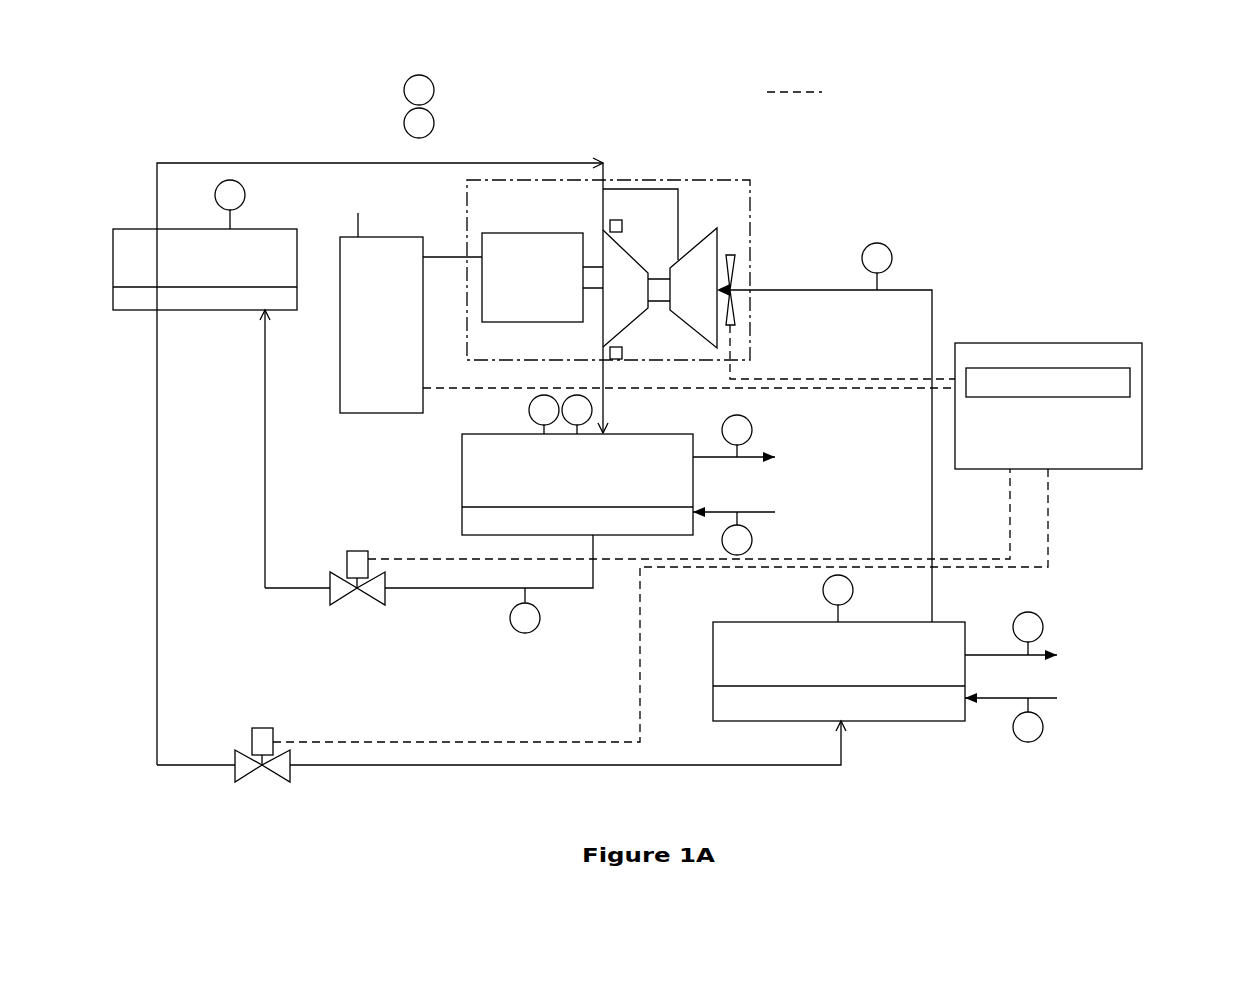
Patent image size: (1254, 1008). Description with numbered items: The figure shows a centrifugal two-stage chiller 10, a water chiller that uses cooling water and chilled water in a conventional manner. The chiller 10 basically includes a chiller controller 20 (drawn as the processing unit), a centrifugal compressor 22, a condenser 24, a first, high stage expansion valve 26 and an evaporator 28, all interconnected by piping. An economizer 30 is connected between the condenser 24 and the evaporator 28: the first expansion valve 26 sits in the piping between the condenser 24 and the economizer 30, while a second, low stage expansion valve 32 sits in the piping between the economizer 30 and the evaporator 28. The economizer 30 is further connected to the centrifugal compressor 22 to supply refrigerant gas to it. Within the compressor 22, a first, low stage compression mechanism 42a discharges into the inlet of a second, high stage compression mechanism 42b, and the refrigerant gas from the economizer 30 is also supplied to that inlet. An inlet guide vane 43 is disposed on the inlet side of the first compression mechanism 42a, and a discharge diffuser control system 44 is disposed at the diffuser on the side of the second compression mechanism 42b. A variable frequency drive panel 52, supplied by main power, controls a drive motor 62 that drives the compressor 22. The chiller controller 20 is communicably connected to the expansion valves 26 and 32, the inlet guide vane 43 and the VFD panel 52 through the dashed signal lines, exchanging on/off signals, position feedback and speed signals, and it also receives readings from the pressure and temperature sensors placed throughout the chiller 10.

The centrifugal two-stage chiller 10 is at (1120, 157).
The chiller controller 20 is at (1142, 372).
The centrifugal compressor 22 is at (735, 178).
The condenser 24 is at (462, 485).
The first expansion valve 26 is at (330, 600).
The evaporator 28 is at (945, 622).
The economizer 30 is at (141, 229).
The second expansion valve 32 is at (235, 768).
The first compression mechanism 42a is at (693, 250).
The second compression mechanism 42b is at (625, 243).
The inlet guide vane 43 is at (735, 258).
The discharge diffuser control system 44 is at (602, 224).
The VFD panel 52 is at (337, 390).
The drive motor 62 is at (498, 322).